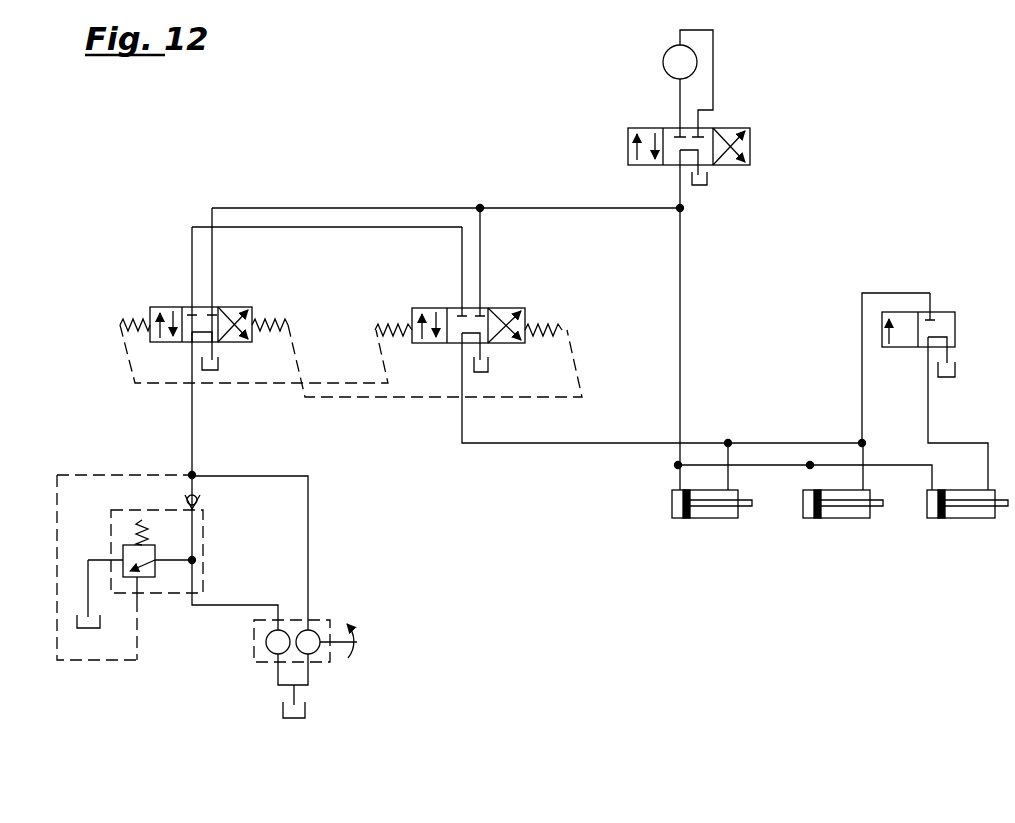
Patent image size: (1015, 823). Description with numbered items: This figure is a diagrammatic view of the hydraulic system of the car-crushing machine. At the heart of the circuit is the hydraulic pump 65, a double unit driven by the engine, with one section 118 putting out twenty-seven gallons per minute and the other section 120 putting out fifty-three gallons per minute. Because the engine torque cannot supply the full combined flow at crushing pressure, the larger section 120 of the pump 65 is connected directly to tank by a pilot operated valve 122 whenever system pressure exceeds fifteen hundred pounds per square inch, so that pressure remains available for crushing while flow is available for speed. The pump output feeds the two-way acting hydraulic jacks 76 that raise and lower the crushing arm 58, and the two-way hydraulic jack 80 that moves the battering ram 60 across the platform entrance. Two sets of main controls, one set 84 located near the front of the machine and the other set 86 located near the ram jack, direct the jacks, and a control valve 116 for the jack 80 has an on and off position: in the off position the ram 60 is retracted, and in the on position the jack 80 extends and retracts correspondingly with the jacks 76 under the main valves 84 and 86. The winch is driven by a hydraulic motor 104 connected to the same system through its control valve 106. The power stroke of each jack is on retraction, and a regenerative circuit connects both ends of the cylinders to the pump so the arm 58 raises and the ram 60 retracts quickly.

The motor 104 is at (663, 62).
The control valve 106 is at (628, 137).
The main control set 84 is at (152, 302).
The main control set 86 is at (529, 295).
The control valve 116 is at (949, 302).
The crushing arm 58 is at (670, 525).
The two way acting hydraulic jacks 76 is at (728, 518).
The battering ram 60 is at (952, 525).
The two-way hydraulic jack 80 is at (980, 518).
The pilot operated valve 122 is at (152, 578).
The hydraulic pump 65 is at (305, 640).
The pump section 118 is at (318, 652).
The pump section 120 is at (268, 652).